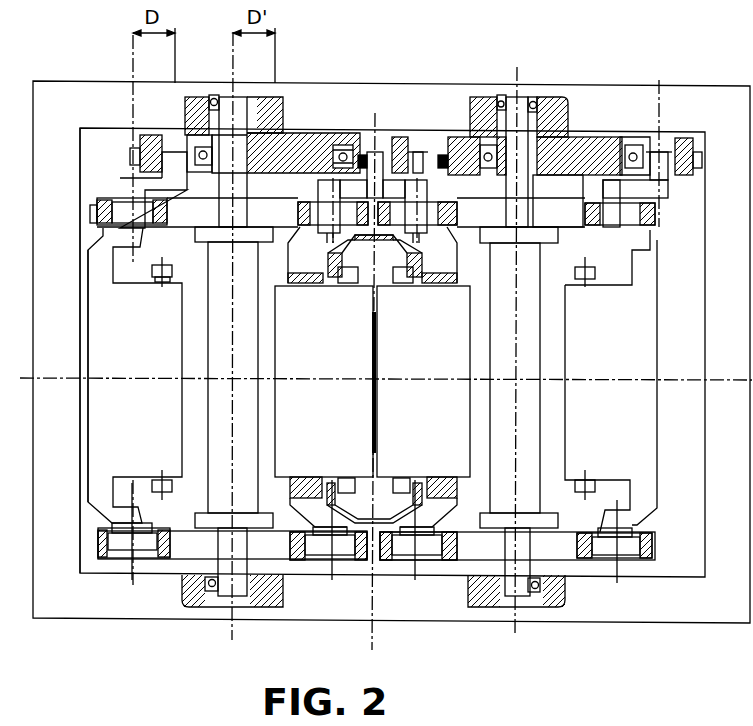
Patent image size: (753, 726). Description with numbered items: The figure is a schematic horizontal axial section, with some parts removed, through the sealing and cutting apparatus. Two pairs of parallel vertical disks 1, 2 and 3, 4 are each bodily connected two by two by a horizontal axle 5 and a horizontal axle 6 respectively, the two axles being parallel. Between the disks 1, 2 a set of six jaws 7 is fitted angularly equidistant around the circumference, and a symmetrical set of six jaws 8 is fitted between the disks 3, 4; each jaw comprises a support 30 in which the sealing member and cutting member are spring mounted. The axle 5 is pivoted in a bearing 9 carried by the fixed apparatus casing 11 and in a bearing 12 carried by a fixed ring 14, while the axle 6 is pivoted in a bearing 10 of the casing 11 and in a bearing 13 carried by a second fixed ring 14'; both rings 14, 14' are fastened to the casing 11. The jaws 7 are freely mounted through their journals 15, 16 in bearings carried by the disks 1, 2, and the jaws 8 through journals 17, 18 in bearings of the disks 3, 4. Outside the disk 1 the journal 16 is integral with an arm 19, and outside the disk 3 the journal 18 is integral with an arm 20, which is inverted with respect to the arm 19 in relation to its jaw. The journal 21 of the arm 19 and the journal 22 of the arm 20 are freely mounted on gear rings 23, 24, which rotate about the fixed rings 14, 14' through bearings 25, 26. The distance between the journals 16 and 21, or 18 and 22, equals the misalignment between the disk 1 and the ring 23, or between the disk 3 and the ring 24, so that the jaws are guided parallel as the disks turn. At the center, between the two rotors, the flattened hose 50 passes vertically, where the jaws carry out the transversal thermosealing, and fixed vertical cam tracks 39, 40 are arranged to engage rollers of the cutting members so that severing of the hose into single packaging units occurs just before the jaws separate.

The disk 1 is at (125, 205).
The disk 2 is at (187, 542).
The disk 3 is at (562, 210).
The disk 4 is at (558, 547).
The axle 5 is at (213, 353).
The axle 6 is at (528, 330).
The jaw 7 is at (88, 300).
The jaw 8 is at (462, 285).
The bearing 9 is at (207, 603).
The bearing 10 is at (533, 603).
The apparatus casing 11 is at (352, 97).
The bearing 12 is at (222, 120).
The bearing 13 is at (533, 107).
The fixed ring 14 is at (286, 89).
The fixed ring 14' is at (517, 90).
The journal 15 is at (128, 547).
The journal 16 is at (118, 198).
The journal 17 is at (415, 550).
The journal 18 is at (435, 135).
The arm 19 is at (160, 192).
The arm 20 is at (650, 188).
The journal 21 is at (170, 160).
The journal 22 is at (657, 143).
The gear ring 23 is at (140, 148).
The gear ring 24 is at (413, 200).
The bearing 25 is at (273, 187).
The bearing 26 is at (477, 133).
The support 30 is at (105, 402).
The cam track 39 is at (363, 250).
The cam track 40 is at (375, 500).
The flattened hose 50 is at (372, 358).